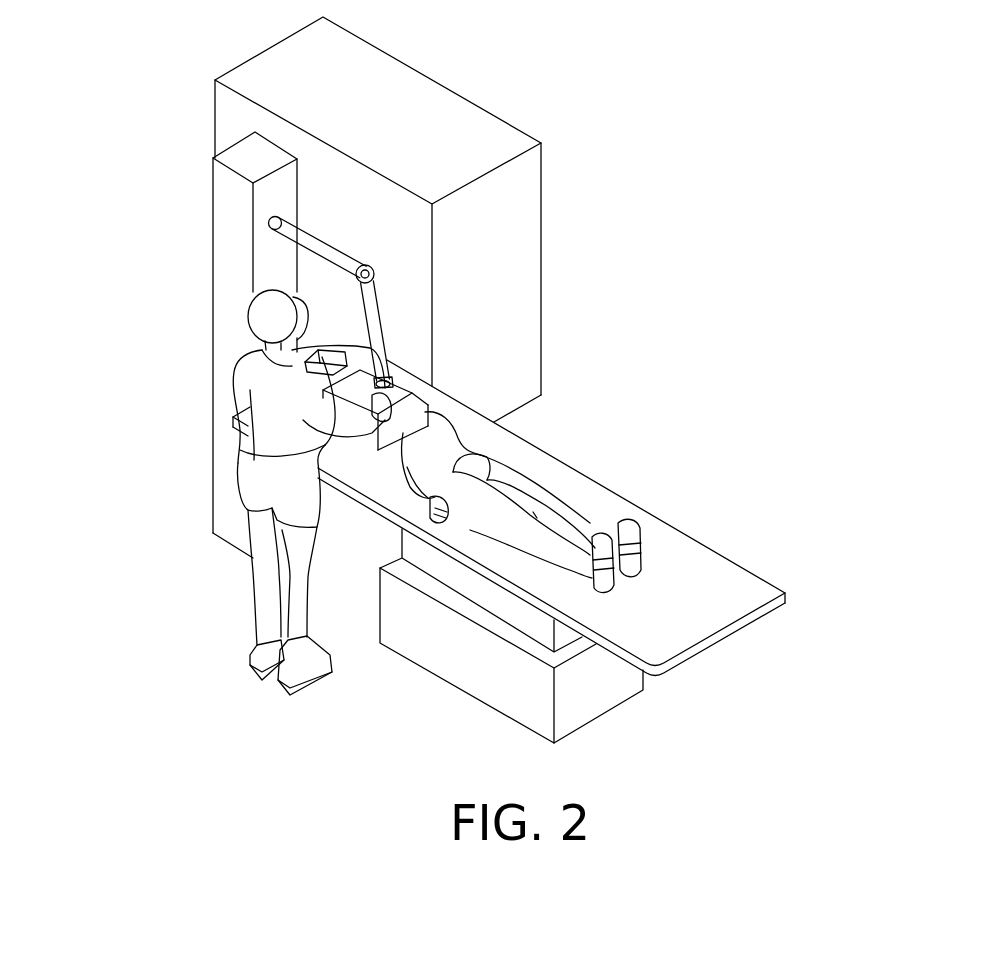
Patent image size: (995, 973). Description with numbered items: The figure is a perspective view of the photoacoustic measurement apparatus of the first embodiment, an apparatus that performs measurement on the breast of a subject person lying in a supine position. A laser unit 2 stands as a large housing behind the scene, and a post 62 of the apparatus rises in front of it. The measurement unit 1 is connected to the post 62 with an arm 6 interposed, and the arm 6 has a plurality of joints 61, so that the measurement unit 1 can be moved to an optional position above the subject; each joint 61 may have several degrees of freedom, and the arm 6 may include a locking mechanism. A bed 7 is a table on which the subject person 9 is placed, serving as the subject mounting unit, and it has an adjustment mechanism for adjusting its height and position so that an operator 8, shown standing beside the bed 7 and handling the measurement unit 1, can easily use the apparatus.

The measurement unit 1 is at (410, 415).
The laser unit 2 is at (433, 98).
The arm 6 is at (295, 230).
The bed 7 is at (737, 582).
The operator 8 is at (255, 525).
The subject person 9 is at (520, 483).
The joint 61 is at (337, 258).
The post 62 is at (228, 208).